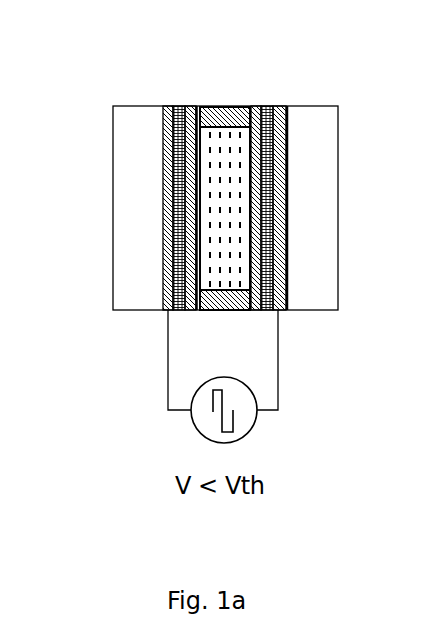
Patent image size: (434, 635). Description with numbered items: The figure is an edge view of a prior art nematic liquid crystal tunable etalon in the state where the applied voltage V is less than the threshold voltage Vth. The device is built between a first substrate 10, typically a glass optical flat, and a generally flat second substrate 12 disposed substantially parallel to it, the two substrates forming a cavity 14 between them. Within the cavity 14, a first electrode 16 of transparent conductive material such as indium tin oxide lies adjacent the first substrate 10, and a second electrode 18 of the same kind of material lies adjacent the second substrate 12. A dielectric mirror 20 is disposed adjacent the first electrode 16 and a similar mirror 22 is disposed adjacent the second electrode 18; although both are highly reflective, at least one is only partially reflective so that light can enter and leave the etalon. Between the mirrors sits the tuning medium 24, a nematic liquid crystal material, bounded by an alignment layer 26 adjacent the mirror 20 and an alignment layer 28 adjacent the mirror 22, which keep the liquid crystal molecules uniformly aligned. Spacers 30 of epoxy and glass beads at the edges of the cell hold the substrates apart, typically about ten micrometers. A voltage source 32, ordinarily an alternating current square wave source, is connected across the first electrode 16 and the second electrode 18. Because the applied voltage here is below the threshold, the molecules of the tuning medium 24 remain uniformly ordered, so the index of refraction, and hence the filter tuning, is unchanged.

The first substrate 10 is at (130, 243).
The second substrate 12 is at (297, 302).
The cavity 14 is at (215, 268).
The first electrode 16 is at (168, 132).
The second electrode 18 is at (280, 153).
The mirror 20 is at (181, 108).
The mirror 22 is at (273, 106).
The tuning medium 24 is at (218, 219).
The alignment layer 26 is at (188, 108).
The alignment layer 28 is at (259, 106).
The spacers 30 is at (238, 105).
The voltage source 32 is at (246, 434).